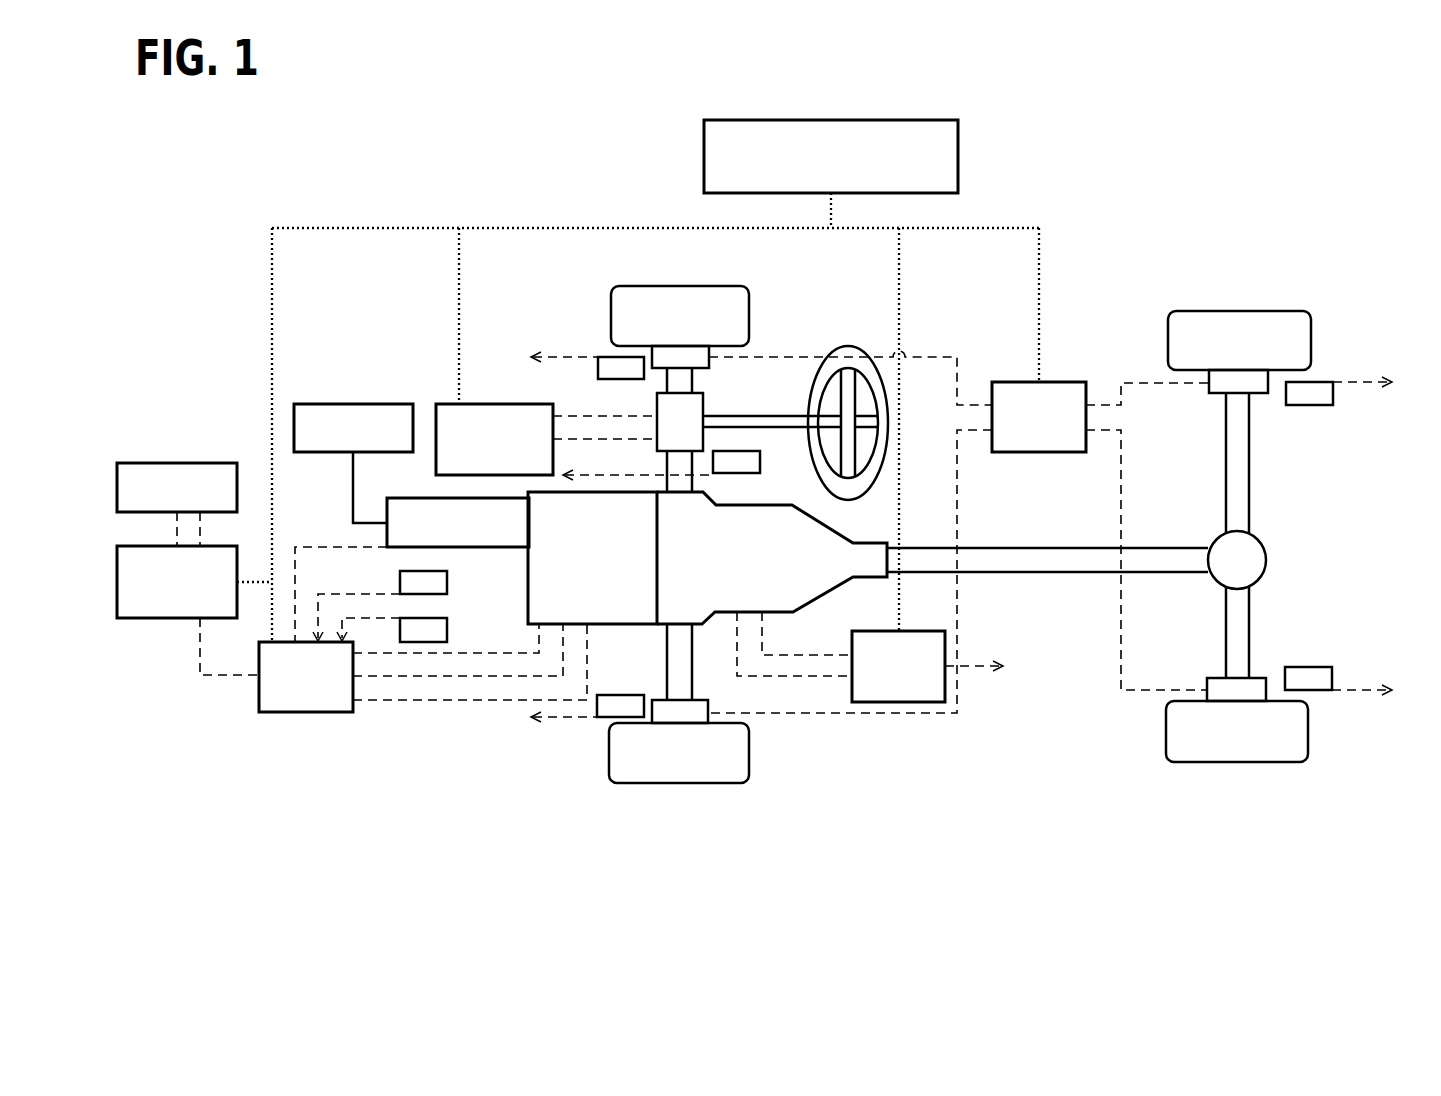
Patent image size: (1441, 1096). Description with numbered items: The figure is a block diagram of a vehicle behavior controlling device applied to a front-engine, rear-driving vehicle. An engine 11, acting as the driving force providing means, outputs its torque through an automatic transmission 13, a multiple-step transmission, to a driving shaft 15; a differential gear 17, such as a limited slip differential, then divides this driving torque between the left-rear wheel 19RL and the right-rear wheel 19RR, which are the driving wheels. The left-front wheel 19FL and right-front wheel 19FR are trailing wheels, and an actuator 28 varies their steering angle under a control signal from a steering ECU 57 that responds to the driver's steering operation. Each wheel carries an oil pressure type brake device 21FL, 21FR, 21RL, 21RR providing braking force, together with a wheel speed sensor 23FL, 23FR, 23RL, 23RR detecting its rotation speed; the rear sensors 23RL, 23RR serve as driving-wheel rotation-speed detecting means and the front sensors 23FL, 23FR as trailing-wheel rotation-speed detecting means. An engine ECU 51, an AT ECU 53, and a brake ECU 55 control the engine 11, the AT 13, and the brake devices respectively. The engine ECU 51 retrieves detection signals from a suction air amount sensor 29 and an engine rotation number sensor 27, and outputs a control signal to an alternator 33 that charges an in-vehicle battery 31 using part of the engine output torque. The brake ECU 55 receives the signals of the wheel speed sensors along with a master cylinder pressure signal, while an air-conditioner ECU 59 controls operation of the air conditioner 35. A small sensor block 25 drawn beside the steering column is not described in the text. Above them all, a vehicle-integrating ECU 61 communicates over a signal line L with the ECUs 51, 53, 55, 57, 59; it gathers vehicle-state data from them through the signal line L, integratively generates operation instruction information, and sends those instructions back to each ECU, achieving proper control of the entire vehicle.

The signal line L is at (352, 228).
The engine 11 is at (598, 624).
The automatic transmission 13 is at (750, 505).
The driving shaft 15 is at (992, 572).
The differential gear 17 is at (1262, 537).
The right-front wheel 19FR is at (668, 286).
The left-front wheel 19FL is at (668, 783).
The right-rear wheel 19RR is at (1228, 311).
The left-rear wheel 19RL is at (1225, 762).
The brake device 21FR is at (700, 368).
The brake device 21FL is at (700, 706).
The brake device 21RR is at (1213, 393).
The brake device 21RL is at (1213, 678).
The wheel speed sensor 23FR is at (612, 357).
The wheel speed sensor 23FL is at (605, 717).
The wheel speed sensor 23RR is at (1308, 405).
The wheel speed sensor 23RL is at (1305, 667).
The steering angle sensor 25 is at (740, 451).
The engine rotation number sensor 27 is at (447, 582).
The actuator 28 is at (657, 405).
The suction air amount sensor 29 is at (447, 630).
The in-vehicle battery 31 is at (343, 404).
The alternator 33 is at (435, 498).
The air conditioner 35 is at (152, 463).
The engine ECU 51 is at (285, 712).
The AT ECU 53 is at (888, 631).
The brake ECU 55 is at (1050, 382).
The steering ECU 57 is at (508, 404).
The air-conditioner ECU 59 is at (130, 618).
The vehicle-integrating ECU 61 is at (958, 150).